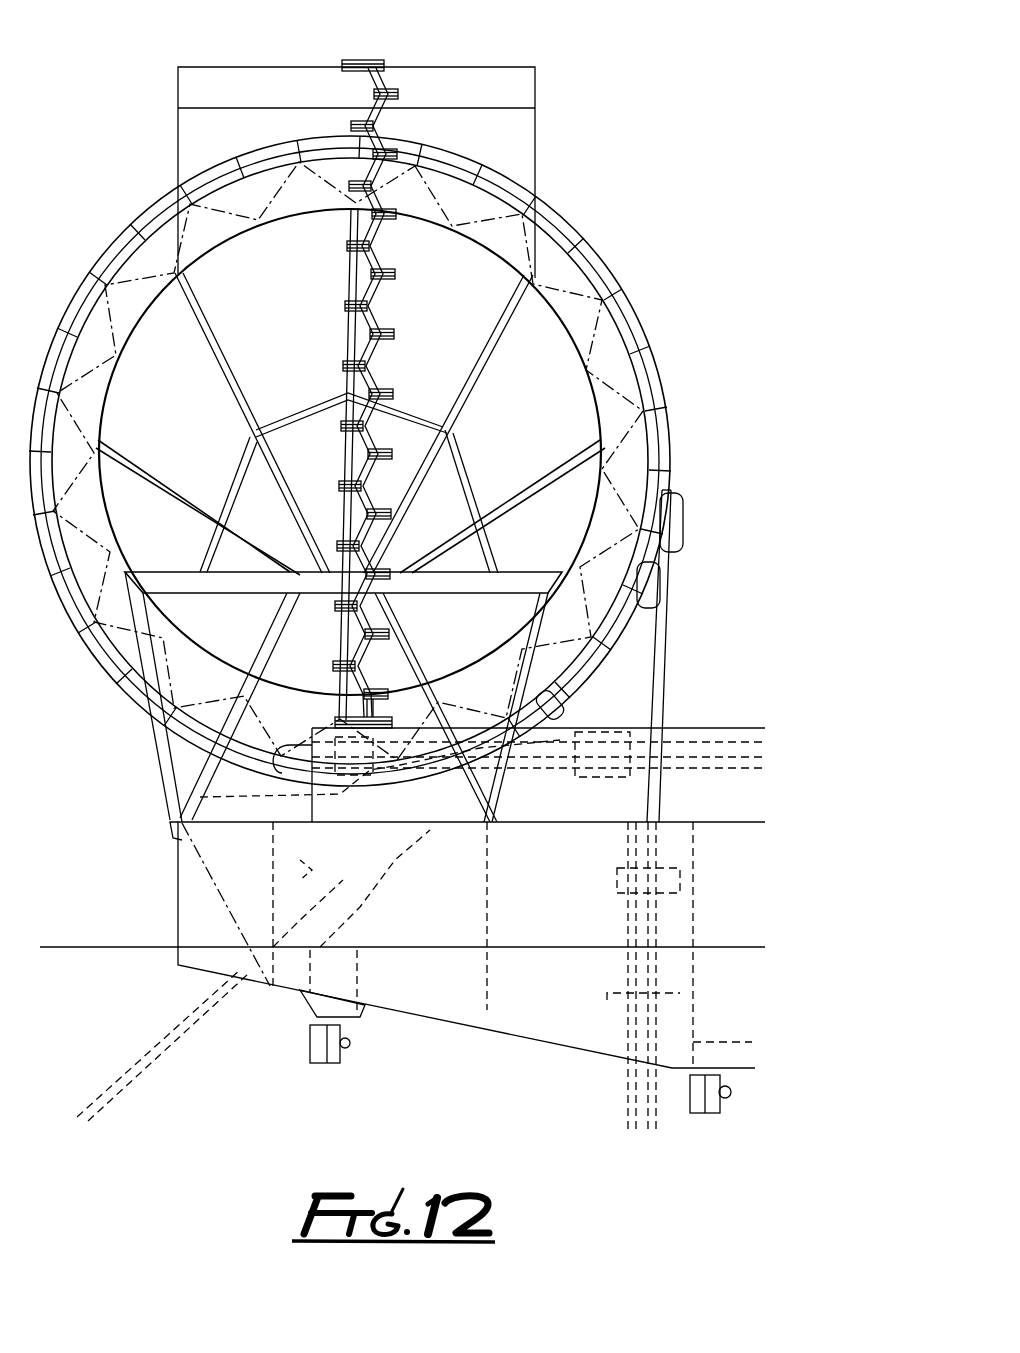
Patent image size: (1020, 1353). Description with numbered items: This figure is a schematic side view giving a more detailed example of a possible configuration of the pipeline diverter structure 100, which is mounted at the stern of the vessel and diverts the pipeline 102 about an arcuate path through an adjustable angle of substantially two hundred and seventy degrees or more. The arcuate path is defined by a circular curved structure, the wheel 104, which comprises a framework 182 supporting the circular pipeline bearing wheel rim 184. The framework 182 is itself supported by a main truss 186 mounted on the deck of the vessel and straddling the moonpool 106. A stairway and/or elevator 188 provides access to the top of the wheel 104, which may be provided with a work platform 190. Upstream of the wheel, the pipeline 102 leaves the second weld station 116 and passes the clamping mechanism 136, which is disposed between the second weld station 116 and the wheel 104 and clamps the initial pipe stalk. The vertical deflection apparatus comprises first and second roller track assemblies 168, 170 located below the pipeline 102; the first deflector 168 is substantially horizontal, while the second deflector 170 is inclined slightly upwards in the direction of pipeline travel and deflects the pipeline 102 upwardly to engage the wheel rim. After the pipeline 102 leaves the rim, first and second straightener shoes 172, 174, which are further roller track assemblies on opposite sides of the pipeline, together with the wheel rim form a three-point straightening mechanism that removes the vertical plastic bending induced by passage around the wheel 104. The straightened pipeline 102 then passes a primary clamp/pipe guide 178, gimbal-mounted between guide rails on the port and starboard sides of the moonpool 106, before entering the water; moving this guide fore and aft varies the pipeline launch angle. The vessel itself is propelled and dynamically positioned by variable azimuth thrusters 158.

The pipeline diverter structure 100 is at (678, 132).
The pipeline 102 is at (660, 632).
The curved structure (wheel) 104 is at (612, 328).
The moonpool 106 is at (512, 1002).
The second weld station 116 is at (576, 758).
The clamping mechanism 136 is at (600, 776).
The variable azimuth thrusters 158 is at (317, 1053).
The first roller track assembly (first deflector) 168 is at (325, 784).
The second roller track assembly (second deflector) 170 is at (275, 773).
The first straightener shoe 172 is at (683, 527).
The second straightener shoe 174 is at (650, 590).
The primary clamp/pipe guide 178 is at (293, 987).
The framework 182 is at (513, 380).
The wheel rim 184 is at (652, 410).
The main truss 186 is at (160, 716).
The stairway and/or elevator 188 is at (322, 299).
The work platform 190 is at (516, 67).